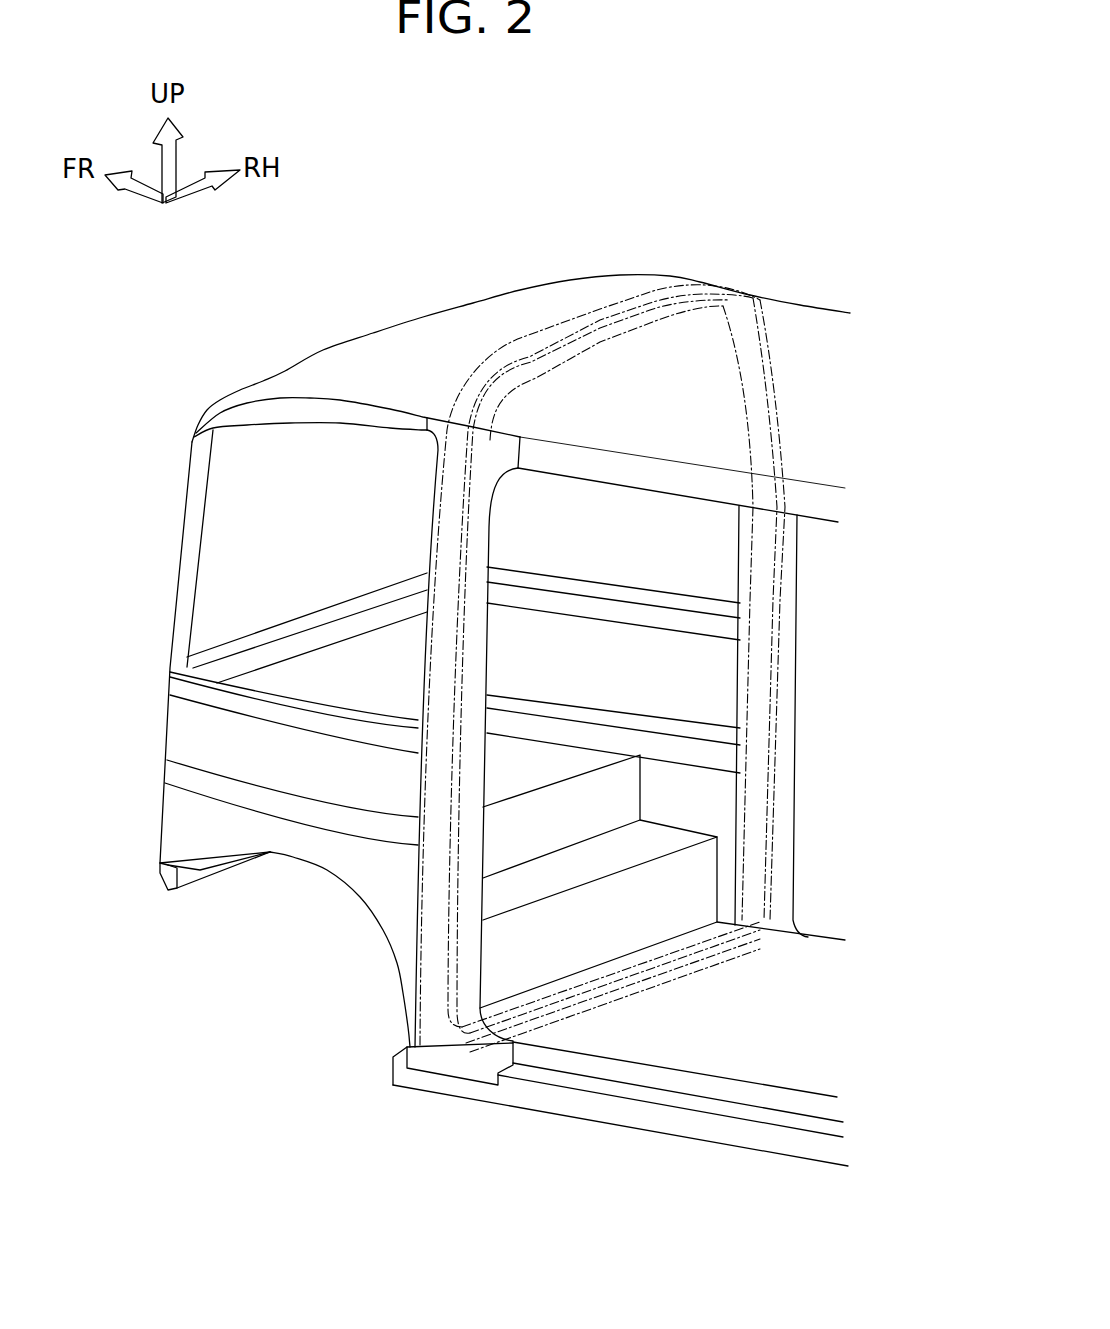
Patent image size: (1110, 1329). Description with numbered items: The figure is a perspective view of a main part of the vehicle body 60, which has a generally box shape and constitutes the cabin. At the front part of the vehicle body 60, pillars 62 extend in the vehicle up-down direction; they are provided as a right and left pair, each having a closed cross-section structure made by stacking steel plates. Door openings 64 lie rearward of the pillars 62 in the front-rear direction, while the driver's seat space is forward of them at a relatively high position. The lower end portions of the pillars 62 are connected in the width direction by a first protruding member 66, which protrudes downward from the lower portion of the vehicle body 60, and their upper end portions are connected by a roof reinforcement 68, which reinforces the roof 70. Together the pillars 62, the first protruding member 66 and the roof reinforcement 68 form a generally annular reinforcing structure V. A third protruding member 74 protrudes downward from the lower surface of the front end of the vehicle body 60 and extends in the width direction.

The vehicle body 60 is at (135, 388).
The pillar 62 is at (417, 945).
The door opening 64 is at (663, 1062).
The first protruding member 66 is at (673, 977).
The roof reinforcement 68 is at (585, 318).
The roof 70 is at (695, 347).
The third protruding member 74 is at (177, 892).
The reinforcing structure V is at (779, 674).